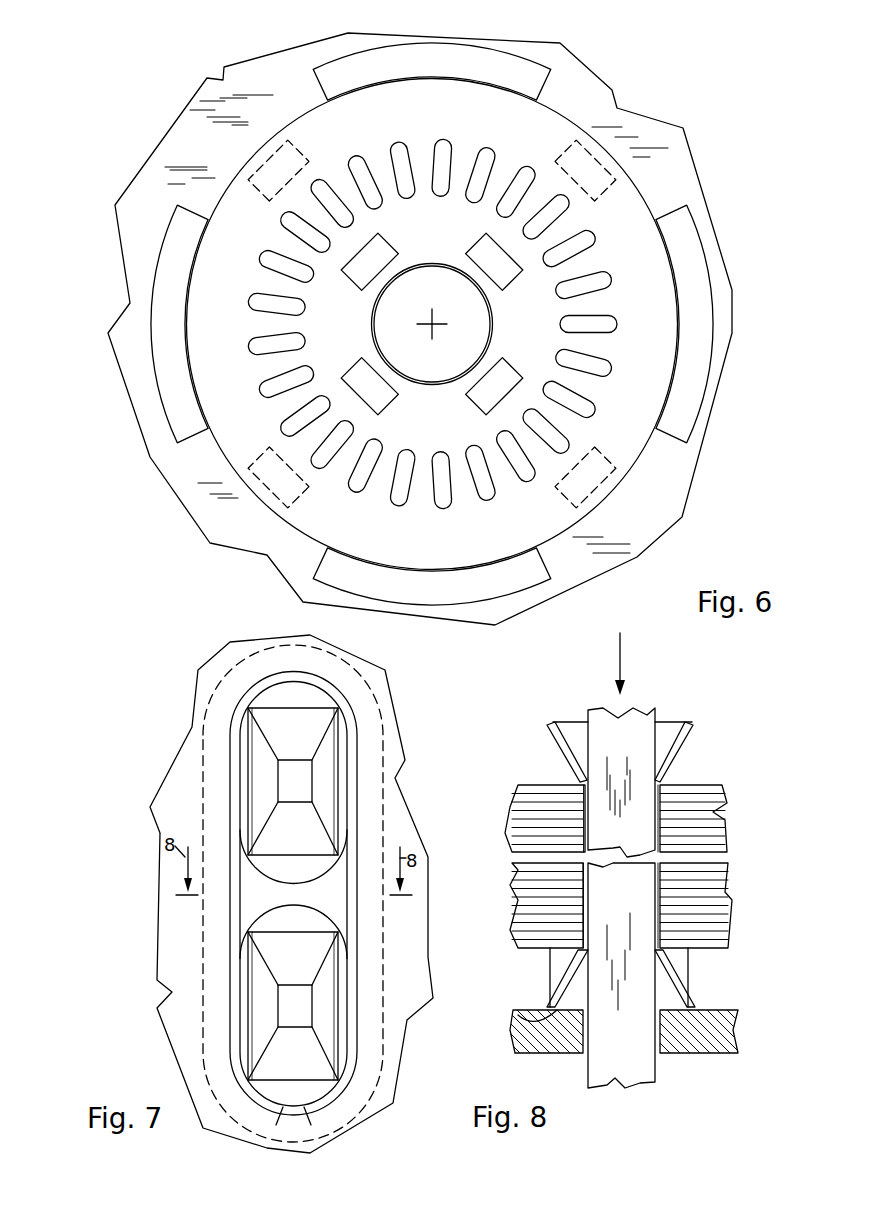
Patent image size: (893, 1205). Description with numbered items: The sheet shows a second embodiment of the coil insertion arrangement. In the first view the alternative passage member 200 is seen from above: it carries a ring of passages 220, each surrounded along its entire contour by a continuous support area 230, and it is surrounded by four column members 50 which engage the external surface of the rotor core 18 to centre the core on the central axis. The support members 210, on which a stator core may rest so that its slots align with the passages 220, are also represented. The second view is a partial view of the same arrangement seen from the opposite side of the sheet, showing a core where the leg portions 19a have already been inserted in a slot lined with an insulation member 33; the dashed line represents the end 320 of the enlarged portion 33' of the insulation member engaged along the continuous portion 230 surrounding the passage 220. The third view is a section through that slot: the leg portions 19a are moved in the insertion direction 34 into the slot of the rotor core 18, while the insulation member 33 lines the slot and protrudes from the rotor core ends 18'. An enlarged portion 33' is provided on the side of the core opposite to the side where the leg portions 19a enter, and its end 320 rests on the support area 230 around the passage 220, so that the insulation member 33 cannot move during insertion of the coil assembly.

In FIG. 6, the column member 50 is at (357, 73).
In FIG. 6, the passage member 200 is at (637, 103).
In FIG. 7, the passage member 200 is at (160, 1045).
In FIG. 8, the passage member 200 is at (740, 1030).
In FIG. 6, the support member 210 is at (485, 252).
In FIG. 6, the passage 220 is at (441, 140).
In FIG. 7, the passage 220 is at (227, 788).
In FIG. 8, the passage 220 is at (658, 1050).
In FIG. 6, the support area 230 is at (292, 258).
In FIG. 7, the support area 230 is at (223, 688).
In FIG. 8, the support area 230 is at (520, 1022).
In FIG. 7, the end of enlarged portion 320 is at (203, 958).
In FIG. 8, the end of enlarged portion 320 is at (543, 1006).
In FIG. 7, the insulation member 33 is at (234, 894).
In FIG. 8, the insulation member 33 is at (667, 896).
In FIG. 8, the enlarged portion of insulation member 33' is at (657, 864).
In FIG. 8, the insertion direction 34 is at (620, 655).
In FIG. 8, the leg portion 19a is at (603, 735).
In FIG. 8, the rotor core 18 is at (585, 847).
In FIG. 8, the rotor core end 18' is at (525, 799).